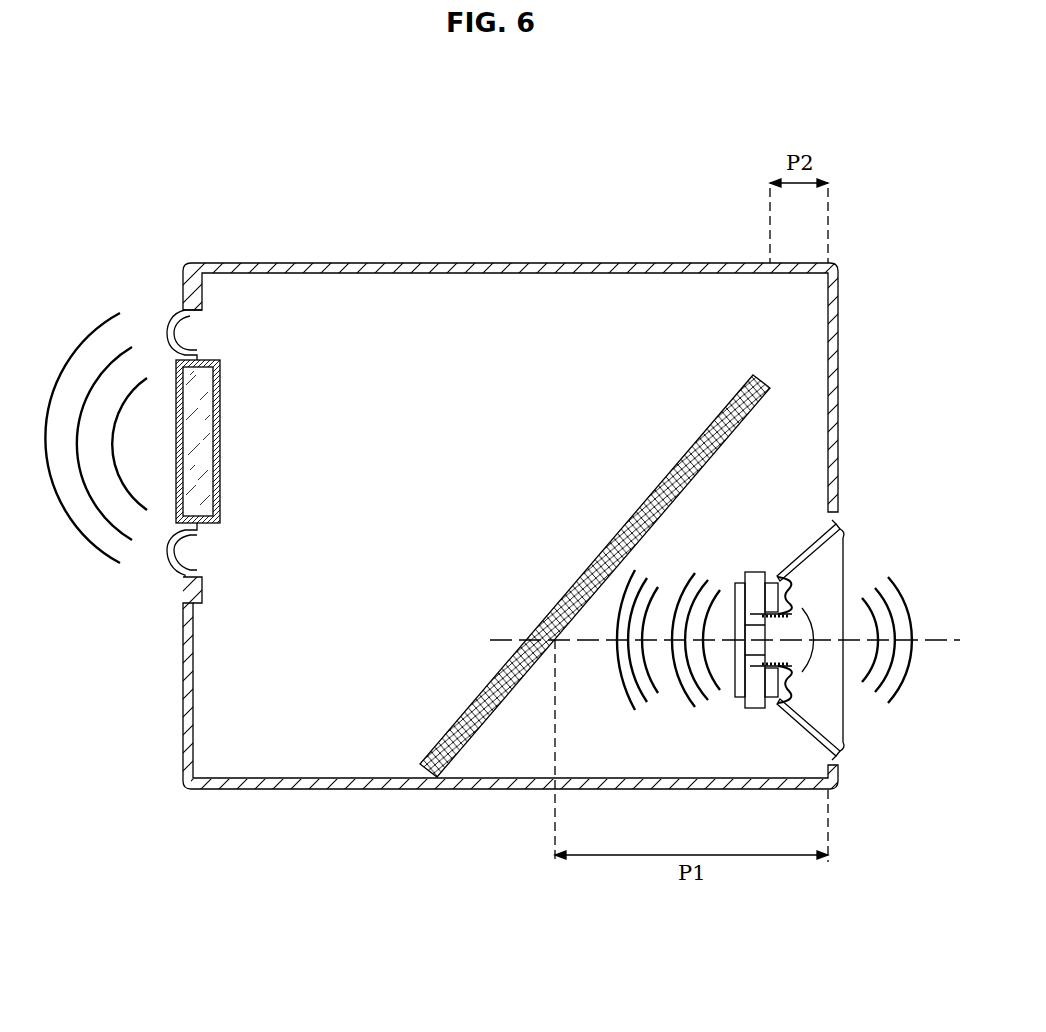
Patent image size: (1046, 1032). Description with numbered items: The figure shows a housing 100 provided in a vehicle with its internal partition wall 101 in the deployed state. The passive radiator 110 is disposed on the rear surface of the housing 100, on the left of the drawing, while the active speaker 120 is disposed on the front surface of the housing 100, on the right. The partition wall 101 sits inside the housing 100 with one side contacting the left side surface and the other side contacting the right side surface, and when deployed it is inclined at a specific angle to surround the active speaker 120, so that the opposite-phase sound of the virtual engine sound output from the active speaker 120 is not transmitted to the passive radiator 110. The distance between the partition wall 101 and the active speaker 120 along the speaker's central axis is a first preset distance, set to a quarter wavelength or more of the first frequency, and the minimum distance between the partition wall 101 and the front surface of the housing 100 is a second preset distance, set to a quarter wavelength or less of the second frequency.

The housing 100 is at (600, 270).
The partition wall 101 is at (432, 778).
The passive radiator 110 is at (211, 380).
The active speaker 120 is at (843, 553).